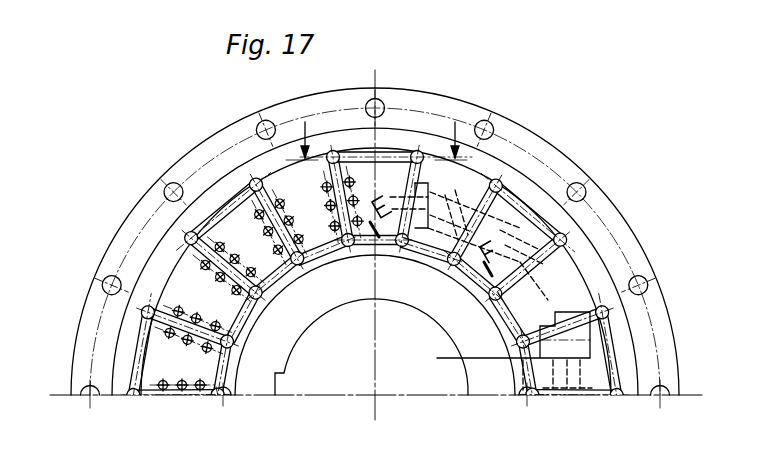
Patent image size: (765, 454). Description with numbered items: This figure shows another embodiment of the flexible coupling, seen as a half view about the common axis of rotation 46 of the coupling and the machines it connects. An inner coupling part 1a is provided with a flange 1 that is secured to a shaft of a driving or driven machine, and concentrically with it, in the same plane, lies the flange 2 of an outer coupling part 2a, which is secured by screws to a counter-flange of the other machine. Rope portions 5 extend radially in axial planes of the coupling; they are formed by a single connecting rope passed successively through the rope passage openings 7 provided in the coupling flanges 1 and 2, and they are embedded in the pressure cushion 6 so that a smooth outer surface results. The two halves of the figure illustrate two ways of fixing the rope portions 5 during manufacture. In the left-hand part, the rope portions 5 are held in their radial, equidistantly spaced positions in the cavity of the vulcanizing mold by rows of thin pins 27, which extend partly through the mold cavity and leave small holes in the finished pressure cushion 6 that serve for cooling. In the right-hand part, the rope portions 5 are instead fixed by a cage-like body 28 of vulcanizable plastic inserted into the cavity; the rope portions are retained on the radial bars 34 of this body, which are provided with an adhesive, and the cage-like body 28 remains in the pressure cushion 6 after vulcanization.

The flange 1 is at (565, 285).
The inner coupling part 1a is at (603, 315).
The flange 2 is at (117, 256).
The outer coupling part 2a is at (103, 252).
The rope portions 5 is at (262, 183).
The pressure cushion 6 is at (158, 273).
The rope passage openings 7 is at (207, 294).
The thin pins 27 is at (231, 250).
The cage-like body 28 is at (437, 200).
The radial bars 34 is at (527, 255).
The axis of rotation 46 is at (377, 398).